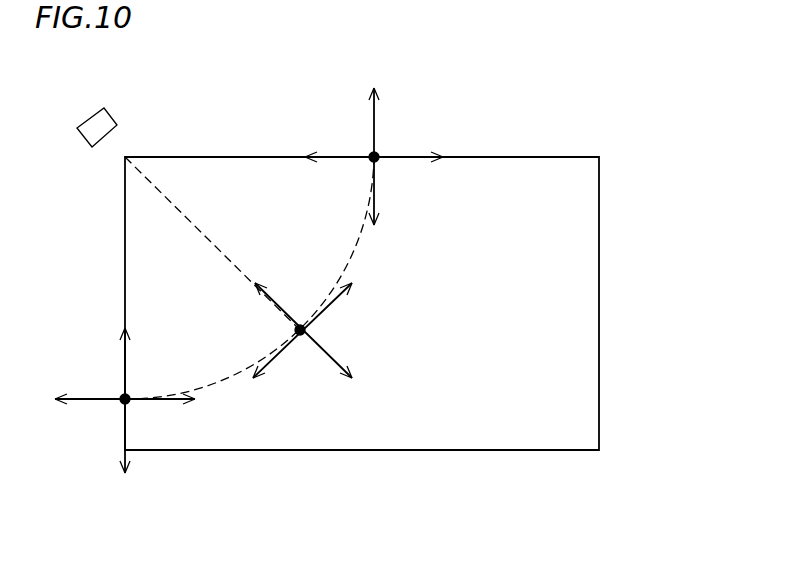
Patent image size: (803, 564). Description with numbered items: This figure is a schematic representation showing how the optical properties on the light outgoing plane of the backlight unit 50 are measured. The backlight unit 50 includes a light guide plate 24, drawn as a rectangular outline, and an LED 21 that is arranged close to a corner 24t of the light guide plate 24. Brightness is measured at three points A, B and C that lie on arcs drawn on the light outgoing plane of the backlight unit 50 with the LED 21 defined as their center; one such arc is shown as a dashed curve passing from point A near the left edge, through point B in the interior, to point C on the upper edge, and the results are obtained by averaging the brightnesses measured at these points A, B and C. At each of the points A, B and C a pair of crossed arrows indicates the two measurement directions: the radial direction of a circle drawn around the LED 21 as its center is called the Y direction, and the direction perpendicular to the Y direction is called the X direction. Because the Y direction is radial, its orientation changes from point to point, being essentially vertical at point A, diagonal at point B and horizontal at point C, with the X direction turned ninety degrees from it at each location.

The LED 21 is at (90, 122).
The light guide plate 24 is at (588, 249).
The corner of the light guide plate 24t is at (126, 157).
The backlight unit 50 is at (605, 100).
The measurement point A is at (122, 403).
The measurement point B is at (301, 322).
The measurement point C is at (378, 152).
The X direction X is at (373, 125).
The Y direction Y is at (402, 160).